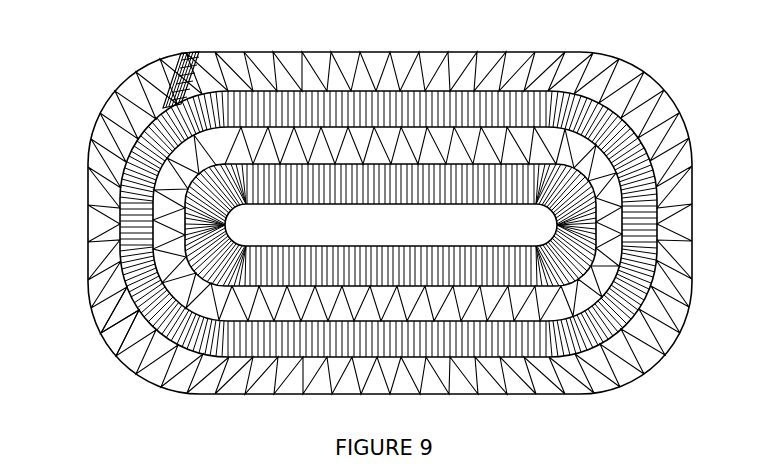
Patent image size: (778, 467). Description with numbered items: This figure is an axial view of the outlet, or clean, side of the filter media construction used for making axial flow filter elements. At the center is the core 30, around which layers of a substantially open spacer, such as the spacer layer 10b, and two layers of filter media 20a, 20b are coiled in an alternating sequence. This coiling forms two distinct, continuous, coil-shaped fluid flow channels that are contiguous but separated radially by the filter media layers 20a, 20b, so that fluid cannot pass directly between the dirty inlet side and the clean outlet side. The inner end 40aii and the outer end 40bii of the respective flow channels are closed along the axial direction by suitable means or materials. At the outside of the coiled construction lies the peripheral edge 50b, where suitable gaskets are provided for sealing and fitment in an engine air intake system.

The spacer layer 10b is at (100, 190).
The filter media layer 20a is at (655, 232).
The filter media layer 20b is at (688, 272).
The core 30 is at (545, 218).
The inner end of flow channel 40aii is at (222, 207).
The outer end of flow channel 40bii is at (188, 52).
The peripheral edge 50b is at (108, 335).